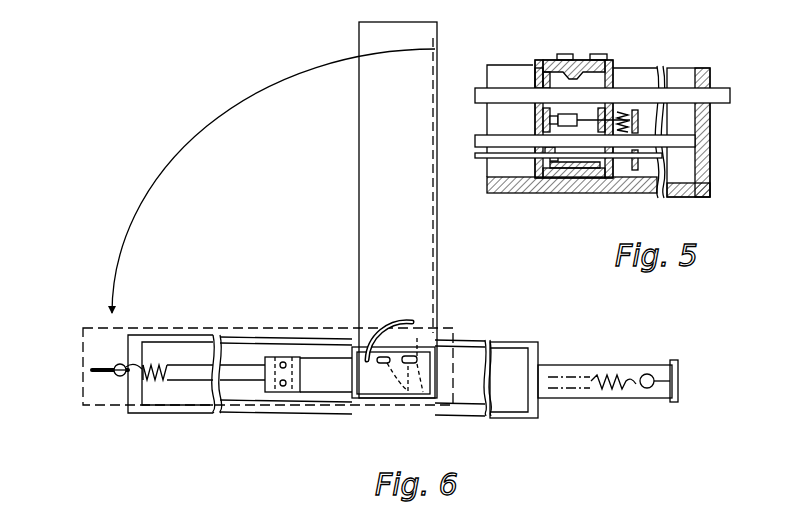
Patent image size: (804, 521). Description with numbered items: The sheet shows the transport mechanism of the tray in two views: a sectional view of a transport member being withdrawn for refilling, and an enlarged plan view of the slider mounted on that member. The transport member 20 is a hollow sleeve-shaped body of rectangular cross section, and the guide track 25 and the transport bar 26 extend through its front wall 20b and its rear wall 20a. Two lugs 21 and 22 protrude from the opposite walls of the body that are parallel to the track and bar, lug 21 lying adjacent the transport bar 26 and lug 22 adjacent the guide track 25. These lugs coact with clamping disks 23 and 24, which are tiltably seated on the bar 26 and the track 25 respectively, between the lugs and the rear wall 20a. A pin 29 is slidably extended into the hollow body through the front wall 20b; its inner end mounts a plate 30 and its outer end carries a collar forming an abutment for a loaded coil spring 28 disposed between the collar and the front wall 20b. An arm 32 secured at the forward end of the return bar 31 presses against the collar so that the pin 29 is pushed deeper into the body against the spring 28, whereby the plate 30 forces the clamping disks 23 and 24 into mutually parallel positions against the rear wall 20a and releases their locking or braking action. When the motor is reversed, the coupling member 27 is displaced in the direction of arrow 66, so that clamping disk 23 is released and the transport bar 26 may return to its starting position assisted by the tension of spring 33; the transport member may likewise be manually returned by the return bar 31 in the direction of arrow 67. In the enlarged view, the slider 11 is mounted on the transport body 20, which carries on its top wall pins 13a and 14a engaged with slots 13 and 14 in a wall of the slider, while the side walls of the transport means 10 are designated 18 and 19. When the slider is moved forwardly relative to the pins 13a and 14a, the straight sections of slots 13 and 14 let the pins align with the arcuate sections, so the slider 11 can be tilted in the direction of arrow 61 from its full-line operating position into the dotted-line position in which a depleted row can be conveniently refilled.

In FIG. 6, the transport means 10 is at (266, 422).
In FIG. 6, the slider 11 is at (418, 37).
In FIG. 6, the slot 13 is at (414, 322).
In FIG. 6, the pin 13a is at (383, 364).
In FIG. 6, the slot 14 is at (404, 364).
In FIG. 6, the pin 14a is at (418, 365).
In FIG. 6, the side wall 18 is at (508, 342).
In FIG. 6, the side wall 19 is at (507, 418).
In FIG. 5, the transport member 20 is at (612, 66).
In FIG. 6, the transport member 20 is at (357, 402).
In FIG. 5, the rear wall 20a is at (537, 78).
In FIG. 5, the front wall 20b is at (617, 180).
In FIG. 5, the lug 21 is at (575, 68).
In FIG. 5, the lug 22 is at (573, 170).
In FIG. 5, the clamping disk 23 is at (547, 72).
In FIG. 5, the clamping disk 24 is at (546, 152).
In FIG. 5, the guide track 25 is at (692, 140).
In FIG. 6, the guide track 25 is at (193, 372).
In FIG. 5, the transport bar 26 is at (721, 96).
In FIG. 6, the transport bar 26 is at (567, 365).
In FIG. 6, the coupling member 27 is at (675, 360).
In FIG. 5, the coil spring 28 is at (619, 114).
In FIG. 5, the pin 29 is at (587, 121).
In FIG. 5, the plate 30 is at (553, 134).
In FIG. 5, the return bar 31 is at (503, 158).
In FIG. 5, the arm 32 is at (638, 168).
In FIG. 6, the spring 33 is at (622, 388).
In FIG. 6, the arrow 61 is at (110, 312).
In FIG. 5, the arrow 66 is at (533, 117).
In FIG. 5, the arrow 67 is at (465, 176).